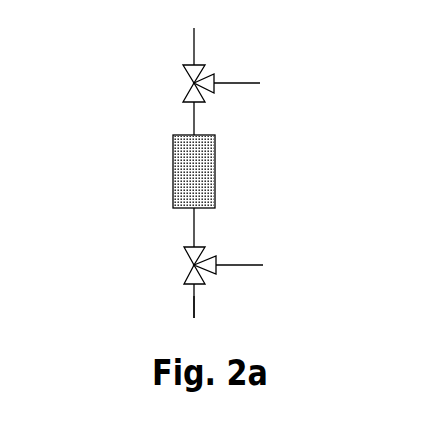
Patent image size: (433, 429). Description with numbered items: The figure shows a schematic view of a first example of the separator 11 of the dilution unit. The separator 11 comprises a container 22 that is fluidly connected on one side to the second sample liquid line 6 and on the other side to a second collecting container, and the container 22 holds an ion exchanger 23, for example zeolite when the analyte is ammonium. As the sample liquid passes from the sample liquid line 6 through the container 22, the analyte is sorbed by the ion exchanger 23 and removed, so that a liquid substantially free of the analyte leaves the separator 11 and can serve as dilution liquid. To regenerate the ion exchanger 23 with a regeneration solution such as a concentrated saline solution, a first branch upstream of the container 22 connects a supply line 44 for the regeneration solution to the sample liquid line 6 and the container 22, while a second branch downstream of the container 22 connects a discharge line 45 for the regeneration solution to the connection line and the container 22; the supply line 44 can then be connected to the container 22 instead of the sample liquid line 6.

The separator 11 is at (141, 126).
The discharge line 45 is at (238, 83).
The ion exchanger 23 is at (203, 162).
The container 22 is at (213, 200).
The supply line 44 is at (235, 265).
The second sample liquid line 6 is at (195, 306).